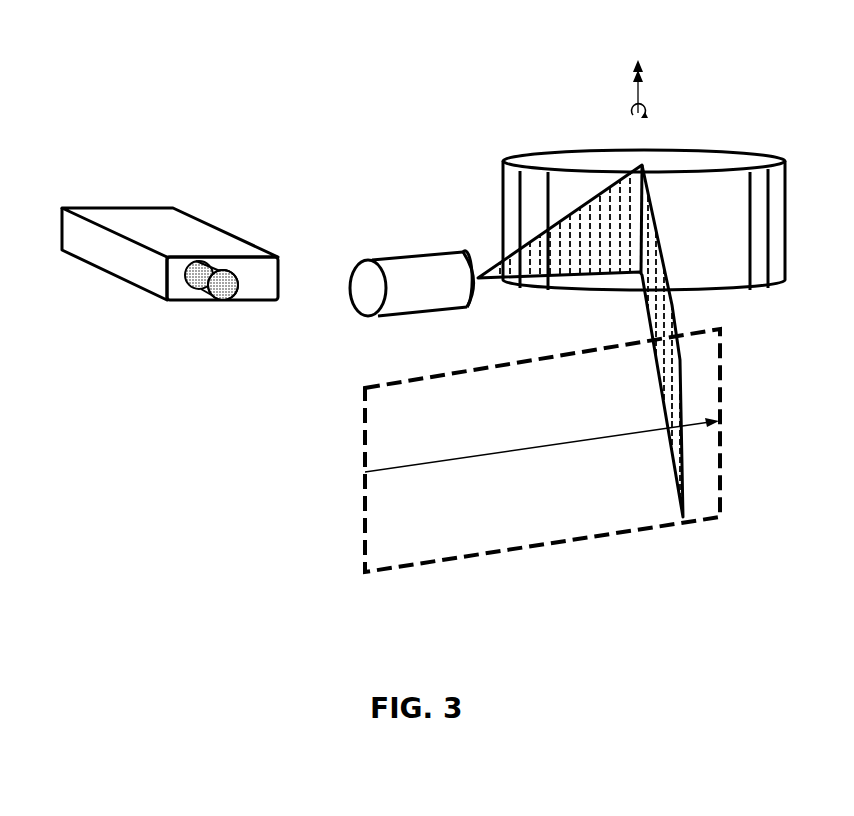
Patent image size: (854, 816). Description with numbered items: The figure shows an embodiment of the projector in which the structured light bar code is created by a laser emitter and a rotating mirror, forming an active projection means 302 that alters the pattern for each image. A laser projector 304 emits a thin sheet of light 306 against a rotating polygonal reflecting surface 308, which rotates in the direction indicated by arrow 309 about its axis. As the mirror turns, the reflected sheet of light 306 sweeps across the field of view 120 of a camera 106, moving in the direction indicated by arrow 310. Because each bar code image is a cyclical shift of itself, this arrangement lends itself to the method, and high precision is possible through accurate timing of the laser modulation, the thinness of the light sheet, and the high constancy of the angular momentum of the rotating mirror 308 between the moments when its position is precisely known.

The camera 106 is at (87, 207).
The field of view 120 is at (365, 411).
The active projection means 302 is at (420, 87).
The laser projector 304 is at (350, 278).
The sheet of light 306 is at (685, 488).
The rotating polygonal reflecting surface 308 is at (548, 148).
The arrow indicating rotation direction 309 is at (653, 85).
The arrow indicating sweep direction 310 is at (693, 420).